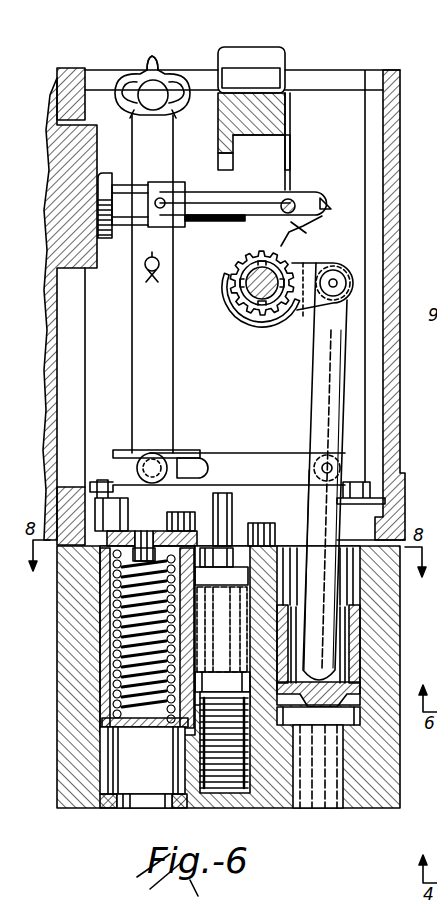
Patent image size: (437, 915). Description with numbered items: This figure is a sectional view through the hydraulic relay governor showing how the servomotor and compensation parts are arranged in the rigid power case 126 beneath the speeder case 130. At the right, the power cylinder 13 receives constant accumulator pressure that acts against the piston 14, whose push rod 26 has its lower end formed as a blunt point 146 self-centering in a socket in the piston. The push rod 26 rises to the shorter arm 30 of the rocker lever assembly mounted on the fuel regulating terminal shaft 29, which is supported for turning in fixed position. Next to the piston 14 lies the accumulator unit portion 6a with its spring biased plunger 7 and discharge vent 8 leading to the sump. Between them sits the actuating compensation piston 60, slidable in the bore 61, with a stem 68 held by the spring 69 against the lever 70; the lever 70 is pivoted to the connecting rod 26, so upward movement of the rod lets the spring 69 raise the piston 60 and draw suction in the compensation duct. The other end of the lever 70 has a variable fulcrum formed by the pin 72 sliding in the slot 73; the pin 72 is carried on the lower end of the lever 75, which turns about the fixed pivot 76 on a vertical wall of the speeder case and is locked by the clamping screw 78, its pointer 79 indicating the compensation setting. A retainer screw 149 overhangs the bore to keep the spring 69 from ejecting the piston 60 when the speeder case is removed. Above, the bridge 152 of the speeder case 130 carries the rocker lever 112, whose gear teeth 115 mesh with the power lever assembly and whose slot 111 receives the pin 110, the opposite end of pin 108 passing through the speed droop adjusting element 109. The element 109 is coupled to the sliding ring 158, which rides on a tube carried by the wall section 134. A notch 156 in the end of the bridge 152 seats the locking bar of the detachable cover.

The notch 156 is at (247, 67).
The pointer 79 is at (156, 68).
The clamping screw 78 is at (150, 105).
The bridge element 152 is at (285, 111).
The speed droop adjusting element 109 is at (265, 197).
The pin 108 is at (300, 193).
The pin 110 is at (349, 181).
The slot 111 is at (326, 207).
The rocker lever 112 is at (303, 233).
The gear teeth 115 is at (238, 250).
The fuel regulating terminal shaft 29 is at (252, 287).
The shorter arm 30 is at (290, 321).
The speeder case 130 is at (392, 207).
The wall section 134 is at (55, 358).
The lever 75 is at (165, 379).
The pivot 76 is at (146, 272).
The ring 158 is at (165, 185).
The pin 72 is at (140, 457).
The slot 73 is at (203, 462).
The lever 70 is at (217, 472).
The stem 68 is at (226, 503).
The retainer screw 149 is at (245, 548).
The bore 61 is at (268, 541).
The push rod 26 is at (331, 575).
The piston 14 is at (352, 638).
The blunt point 146 is at (318, 688).
The power case 126 is at (58, 684).
The discharge vent 8 is at (142, 740).
The plunger 7 is at (146, 763).
The accumulator unit portion 6a is at (128, 769).
The actuating compensation piston 60 is at (222, 625).
The spring 69 is at (234, 793).
The power cylinder 13 is at (356, 717).